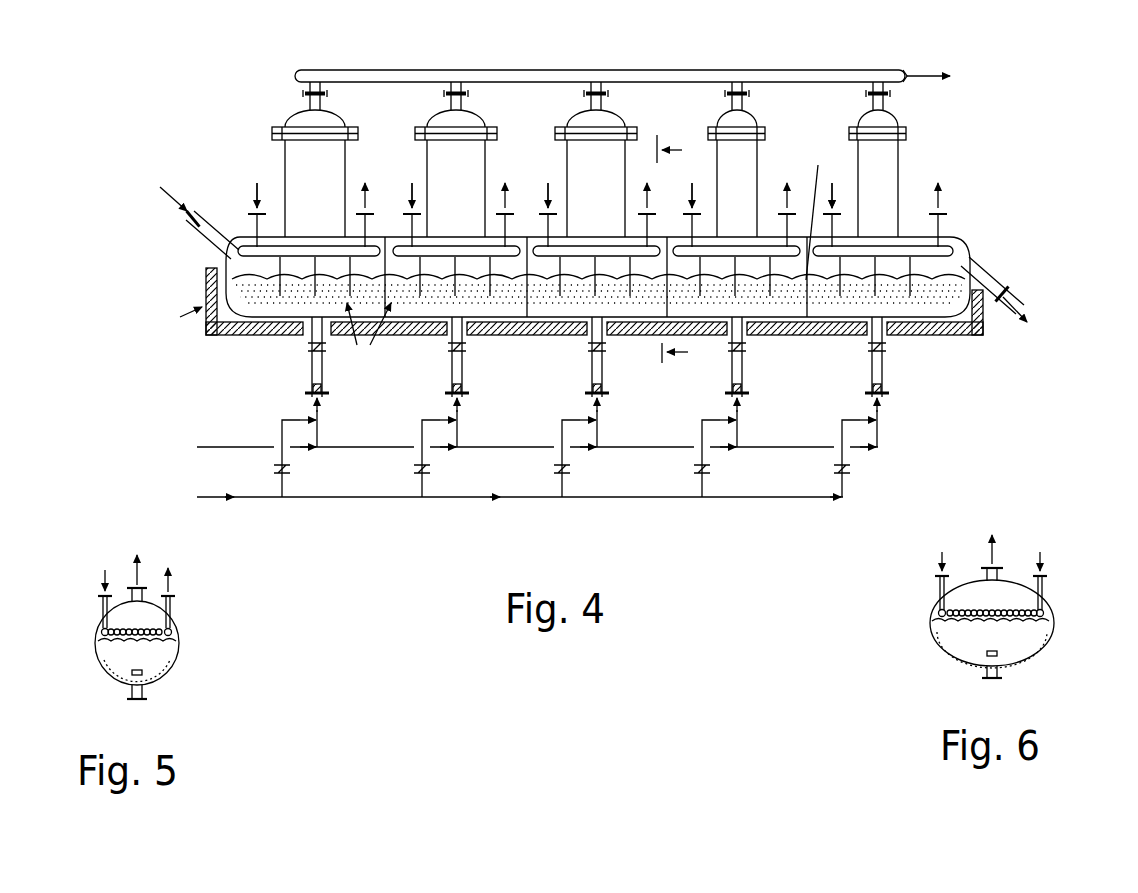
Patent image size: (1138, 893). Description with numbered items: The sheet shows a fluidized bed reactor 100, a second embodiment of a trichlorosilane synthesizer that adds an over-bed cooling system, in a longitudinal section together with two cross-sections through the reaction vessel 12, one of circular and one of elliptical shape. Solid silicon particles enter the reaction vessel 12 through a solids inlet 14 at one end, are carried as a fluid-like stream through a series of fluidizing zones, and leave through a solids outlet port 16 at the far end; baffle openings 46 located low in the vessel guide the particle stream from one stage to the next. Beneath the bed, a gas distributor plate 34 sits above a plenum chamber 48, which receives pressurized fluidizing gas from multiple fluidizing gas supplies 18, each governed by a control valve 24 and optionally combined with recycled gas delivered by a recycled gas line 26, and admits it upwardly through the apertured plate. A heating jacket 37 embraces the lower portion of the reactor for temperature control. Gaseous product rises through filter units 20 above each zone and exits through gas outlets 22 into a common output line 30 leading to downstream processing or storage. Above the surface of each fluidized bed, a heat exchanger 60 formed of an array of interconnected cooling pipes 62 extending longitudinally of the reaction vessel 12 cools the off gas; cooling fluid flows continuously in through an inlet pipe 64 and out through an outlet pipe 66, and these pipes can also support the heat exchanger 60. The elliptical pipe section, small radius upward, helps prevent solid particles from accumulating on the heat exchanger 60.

In FIG. 4, the fluidized bed reactor 100 is at (194, 119).
In FIG. 4, the reaction vessel 12 is at (238, 243).
In FIG. 4, the solids inlet 14 is at (186, 223).
In FIG. 4, the solids outlet port 16 is at (993, 287).
In FIG. 4, the fluidizing gas supply 18 is at (322, 377).
In FIG. 4, the filter unit 20 is at (305, 178).
In FIG. 4, the gas outlet 22 is at (310, 100).
In FIG. 4, the control valve 24 is at (302, 351).
In FIG. 4, the recycled gas line 26 is at (258, 500).
In FIG. 4, the common output line 30 is at (800, 69).
In FIG. 4, the gas distributor plate 34 is at (930, 300).
In FIG. 5, the gas distributor plate 34 is at (156, 666).
In FIG. 6, the gas distributor plate 34 is at (958, 642).
In FIG. 4, the heating jacket 37 is at (982, 323).
In FIG. 5, the baffle opening 46 is at (129, 677).
In FIG. 6, the baffle opening 46 is at (1000, 657).
In FIG. 4, the plenum chamber 48 is at (906, 313).
In FIG. 5, the plenum chamber 48 is at (149, 677).
In FIG. 6, the plenum chamber 48 is at (970, 659).
In FIG. 4, the heat exchanger 60 is at (912, 246).
In FIG. 5, the heat exchanger 60 is at (99, 634).
In FIG. 6, the heat exchanger 60 is at (1048, 614).
In FIG. 4, the cooling pipe 62 is at (452, 252).
In FIG. 4, the inlet pipe 64 is at (282, 208).
In FIG. 5, the inlet pipe 64 is at (99, 602).
In FIG. 6, the inlet pipe 64 is at (948, 584).
In FIG. 4, the outlet pipe 66 is at (528, 208).
In FIG. 5, the outlet pipe 66 is at (174, 600).
In FIG. 6, the outlet pipe 66 is at (1047, 582).